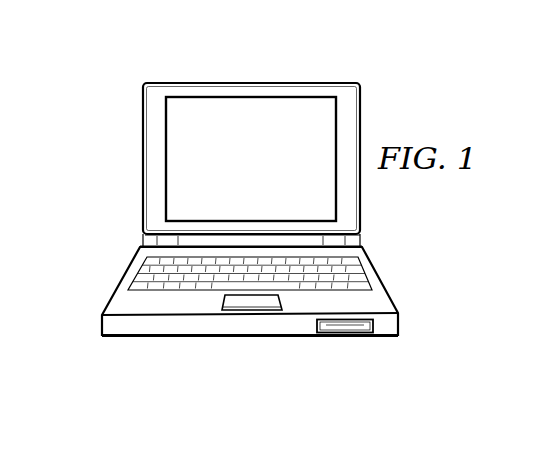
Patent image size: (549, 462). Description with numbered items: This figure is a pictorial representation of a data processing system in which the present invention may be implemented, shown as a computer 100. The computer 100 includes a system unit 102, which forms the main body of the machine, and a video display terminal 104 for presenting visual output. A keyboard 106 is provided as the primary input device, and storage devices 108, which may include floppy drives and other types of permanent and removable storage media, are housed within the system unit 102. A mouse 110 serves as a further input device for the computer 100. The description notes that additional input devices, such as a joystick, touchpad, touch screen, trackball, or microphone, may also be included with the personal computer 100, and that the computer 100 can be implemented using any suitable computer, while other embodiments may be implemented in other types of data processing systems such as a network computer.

The computer 100 is at (147, 57).
The system unit 102 is at (102, 322).
The video display terminal 104 is at (250, 97).
The keyboard 106 is at (141, 272).
The storage devices 108 is at (345, 335).
The mouse 110 is at (252, 312).